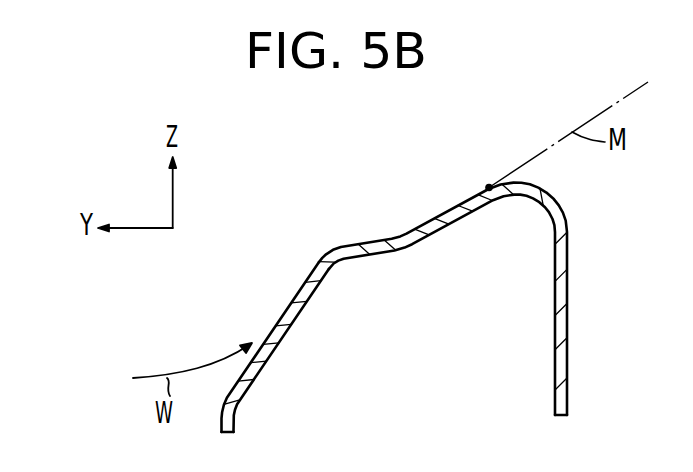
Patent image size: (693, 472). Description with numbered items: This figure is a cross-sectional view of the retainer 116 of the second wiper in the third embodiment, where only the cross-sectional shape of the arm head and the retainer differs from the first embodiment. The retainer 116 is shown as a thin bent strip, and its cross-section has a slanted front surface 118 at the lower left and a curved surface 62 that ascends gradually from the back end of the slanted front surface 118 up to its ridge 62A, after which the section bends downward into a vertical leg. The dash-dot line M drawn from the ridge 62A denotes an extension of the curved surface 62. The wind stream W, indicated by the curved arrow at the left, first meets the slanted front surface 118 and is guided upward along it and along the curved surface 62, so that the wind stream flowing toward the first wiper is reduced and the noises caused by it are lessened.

The curved surface 62 is at (391, 307).
The ridge 62A is at (487, 185).
The retainer 116 is at (497, 160).
The slanted front surface 118 is at (277, 328).